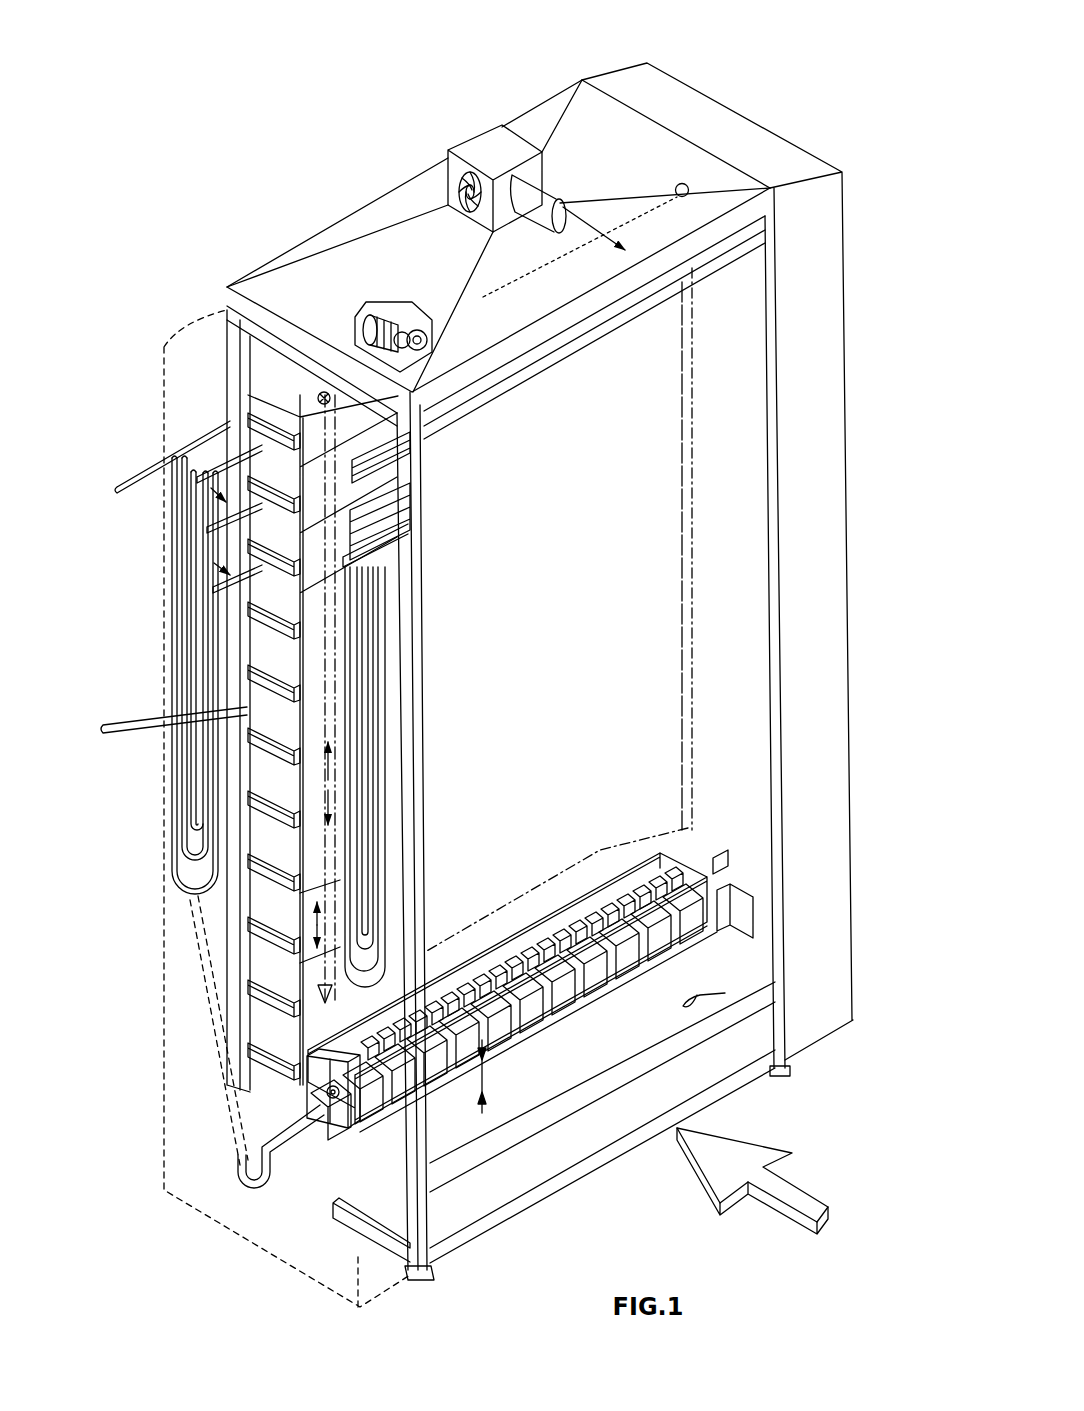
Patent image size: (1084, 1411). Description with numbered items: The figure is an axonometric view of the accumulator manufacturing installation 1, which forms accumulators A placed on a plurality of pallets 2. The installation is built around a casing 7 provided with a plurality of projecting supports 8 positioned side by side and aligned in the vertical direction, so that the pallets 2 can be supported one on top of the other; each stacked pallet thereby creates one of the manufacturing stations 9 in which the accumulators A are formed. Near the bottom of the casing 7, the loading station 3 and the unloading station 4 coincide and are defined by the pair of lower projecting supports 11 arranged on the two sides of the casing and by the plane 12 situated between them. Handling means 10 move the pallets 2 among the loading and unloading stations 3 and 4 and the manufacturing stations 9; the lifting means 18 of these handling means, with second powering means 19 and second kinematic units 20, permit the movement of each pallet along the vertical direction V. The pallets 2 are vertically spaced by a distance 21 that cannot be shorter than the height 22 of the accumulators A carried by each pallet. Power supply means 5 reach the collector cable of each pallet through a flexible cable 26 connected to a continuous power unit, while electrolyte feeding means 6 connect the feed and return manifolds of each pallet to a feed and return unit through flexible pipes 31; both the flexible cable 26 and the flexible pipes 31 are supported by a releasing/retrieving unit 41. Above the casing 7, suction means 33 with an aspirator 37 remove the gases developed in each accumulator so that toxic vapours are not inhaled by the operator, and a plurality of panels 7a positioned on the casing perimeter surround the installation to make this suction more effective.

The accumulator manufacturing installation 1 is at (222, 98).
The pallets 2 is at (337, 546).
The loading station 3 is at (777, 1193).
The unloading station 4 is at (752, 1181).
The power supply means 5 is at (501, 861).
The electrolyte feeding means 6 is at (507, 988).
The casing 7 is at (232, 337).
The panels 7a is at (663, 213).
The projecting supports 8 is at (264, 1008).
The manufacturing stations 9 is at (244, 645).
The handling means 10 is at (346, 336).
The lower projecting supports 11 is at (745, 932).
The plane 12 is at (700, 995).
The lifting means 18 is at (396, 307).
The second powering means 19 is at (372, 322).
The second kinematic units 20 is at (427, 338).
The distance 21 is at (318, 922).
The height 22 is at (490, 1072).
The flexible cable 26 is at (210, 555).
The flexible pipes 31 is at (154, 669).
The suction means 33 is at (428, 133).
The aspirator 37 is at (485, 137).
The releasing/retrieving unit 41 is at (150, 489).
The accumulators A is at (598, 973).
The vertical direction V is at (332, 781).